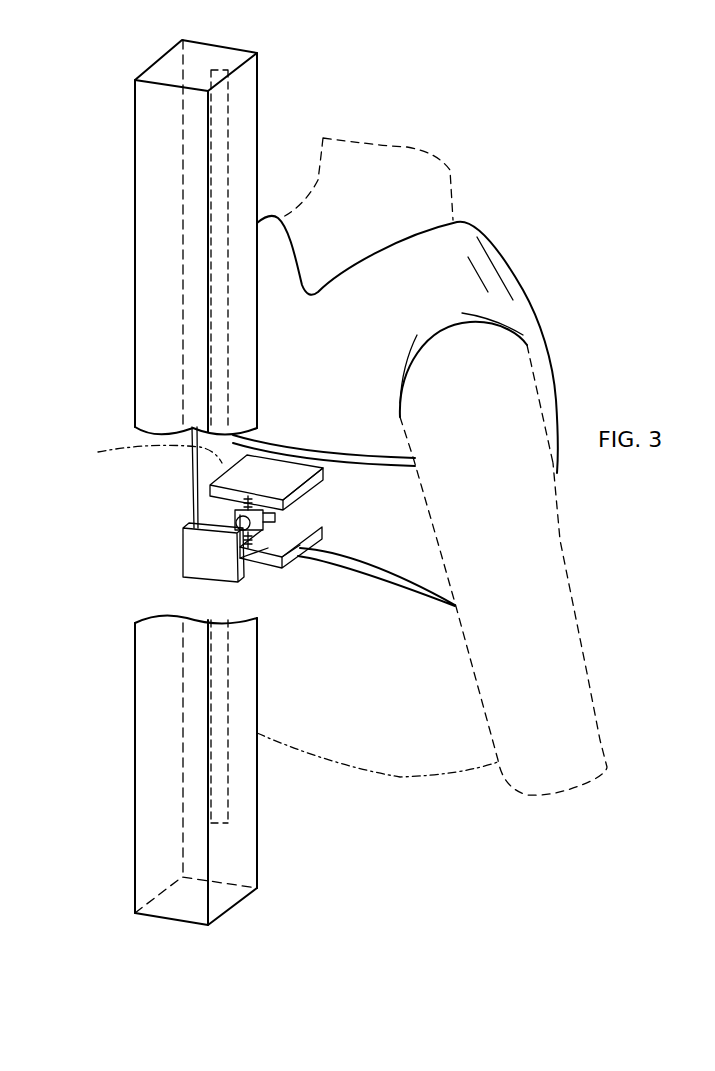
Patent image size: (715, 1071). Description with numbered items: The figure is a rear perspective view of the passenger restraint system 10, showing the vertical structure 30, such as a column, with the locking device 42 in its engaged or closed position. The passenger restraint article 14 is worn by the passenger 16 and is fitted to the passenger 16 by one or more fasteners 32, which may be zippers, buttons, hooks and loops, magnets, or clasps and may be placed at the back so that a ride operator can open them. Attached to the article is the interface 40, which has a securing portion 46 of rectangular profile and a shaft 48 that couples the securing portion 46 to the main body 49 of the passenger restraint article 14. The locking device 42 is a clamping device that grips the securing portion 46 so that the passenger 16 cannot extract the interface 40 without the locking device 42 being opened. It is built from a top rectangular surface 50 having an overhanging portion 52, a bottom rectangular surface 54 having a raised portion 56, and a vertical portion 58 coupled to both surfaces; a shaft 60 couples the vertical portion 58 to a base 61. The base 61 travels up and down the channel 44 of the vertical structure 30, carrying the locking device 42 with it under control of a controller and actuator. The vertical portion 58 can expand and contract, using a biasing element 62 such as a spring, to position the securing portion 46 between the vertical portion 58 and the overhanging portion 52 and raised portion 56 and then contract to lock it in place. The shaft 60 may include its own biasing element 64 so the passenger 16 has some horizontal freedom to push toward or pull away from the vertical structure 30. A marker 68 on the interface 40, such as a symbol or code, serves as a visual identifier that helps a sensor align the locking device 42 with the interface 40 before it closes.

The passenger restraint system 10 is at (508, 90).
The passenger restraint article 14 is at (487, 267).
The passenger 16 is at (372, 182).
The vertical structure 30 is at (243, 120).
The fastener 32 is at (413, 532).
The interface 40 is at (259, 528).
The locking device 42 is at (248, 595).
The channel 44 is at (287, 802).
The securing portion 46 is at (300, 553).
The shaft 48 is at (290, 508).
The main body 49 is at (540, 340).
The top rectangular surface 50 is at (290, 470).
The overhanging portion 52 is at (327, 487).
The bottom rectangular surface 54 is at (313, 548).
The raised portion 56 is at (325, 521).
The vertical portion 58 is at (246, 507).
The shaft 60 is at (268, 548).
The base 61 is at (197, 560).
The biasing element 62 is at (193, 493).
The biasing element 64 is at (236, 525).
The marker 68 is at (313, 545).